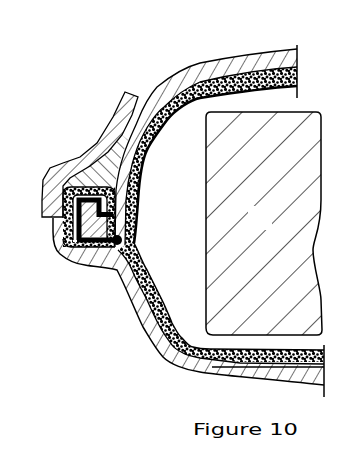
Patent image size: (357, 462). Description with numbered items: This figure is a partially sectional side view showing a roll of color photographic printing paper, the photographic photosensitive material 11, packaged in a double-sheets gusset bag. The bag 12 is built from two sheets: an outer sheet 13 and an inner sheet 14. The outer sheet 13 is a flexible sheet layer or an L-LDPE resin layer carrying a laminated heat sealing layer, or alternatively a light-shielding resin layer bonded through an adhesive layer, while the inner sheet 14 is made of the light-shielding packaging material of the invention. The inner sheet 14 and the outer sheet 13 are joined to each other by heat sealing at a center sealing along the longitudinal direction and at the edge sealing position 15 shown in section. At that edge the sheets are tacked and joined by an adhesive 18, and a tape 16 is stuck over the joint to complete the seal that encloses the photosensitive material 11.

The photographic photosensitive material 11 is at (264, 223).
The bag 12 is at (303, 70).
The outer sheet 13 is at (268, 50).
The inner sheet 14 is at (291, 88).
The edge sealing position 15 is at (82, 264).
The tape 16 is at (62, 165).
The adhesive 18 is at (92, 160).